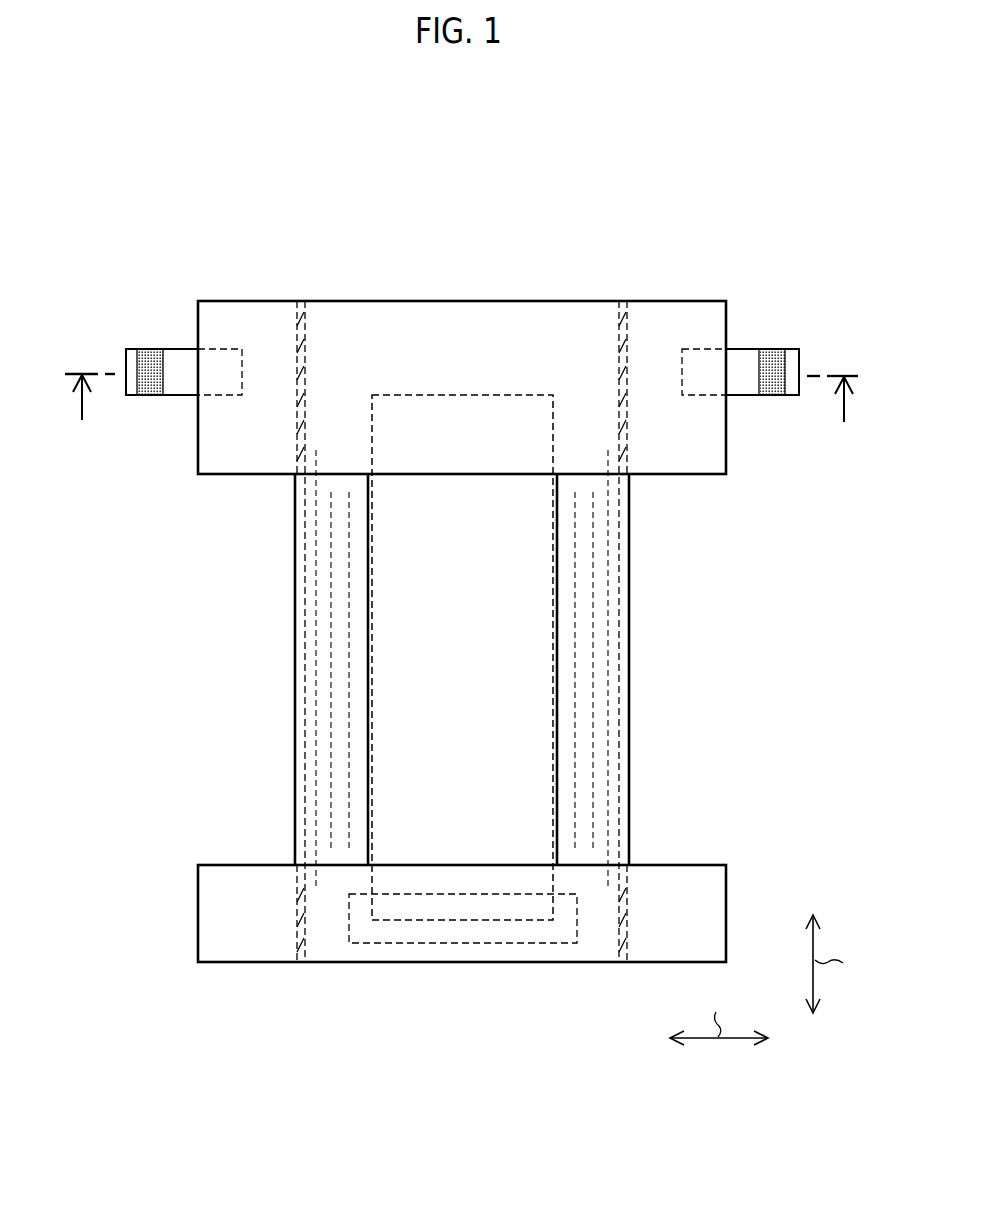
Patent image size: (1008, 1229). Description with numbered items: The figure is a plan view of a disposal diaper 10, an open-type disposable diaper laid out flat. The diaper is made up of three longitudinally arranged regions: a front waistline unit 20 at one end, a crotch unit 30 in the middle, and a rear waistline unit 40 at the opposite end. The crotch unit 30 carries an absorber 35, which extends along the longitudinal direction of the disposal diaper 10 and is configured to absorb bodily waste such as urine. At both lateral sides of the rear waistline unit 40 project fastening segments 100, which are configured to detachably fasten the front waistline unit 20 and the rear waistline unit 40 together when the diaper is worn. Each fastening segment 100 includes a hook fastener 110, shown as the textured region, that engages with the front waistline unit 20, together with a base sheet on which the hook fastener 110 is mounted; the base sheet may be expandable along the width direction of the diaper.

The disposal diaper 10 is at (735, 241).
The front waistline unit 20 is at (694, 865).
The crotch unit 30 is at (612, 695).
The absorber 35 is at (560, 624).
The rear waistline unit 40 is at (559, 301).
The fastening segment 100 is at (168, 403).
The hook fastener 110 is at (775, 358).